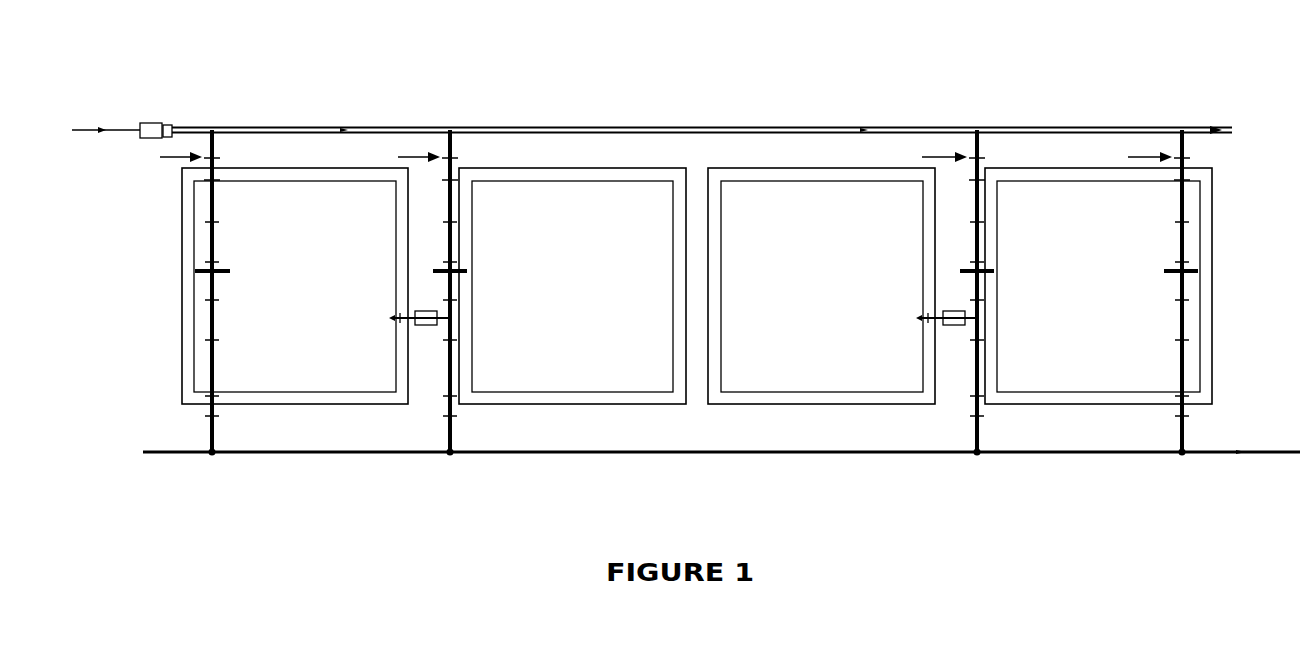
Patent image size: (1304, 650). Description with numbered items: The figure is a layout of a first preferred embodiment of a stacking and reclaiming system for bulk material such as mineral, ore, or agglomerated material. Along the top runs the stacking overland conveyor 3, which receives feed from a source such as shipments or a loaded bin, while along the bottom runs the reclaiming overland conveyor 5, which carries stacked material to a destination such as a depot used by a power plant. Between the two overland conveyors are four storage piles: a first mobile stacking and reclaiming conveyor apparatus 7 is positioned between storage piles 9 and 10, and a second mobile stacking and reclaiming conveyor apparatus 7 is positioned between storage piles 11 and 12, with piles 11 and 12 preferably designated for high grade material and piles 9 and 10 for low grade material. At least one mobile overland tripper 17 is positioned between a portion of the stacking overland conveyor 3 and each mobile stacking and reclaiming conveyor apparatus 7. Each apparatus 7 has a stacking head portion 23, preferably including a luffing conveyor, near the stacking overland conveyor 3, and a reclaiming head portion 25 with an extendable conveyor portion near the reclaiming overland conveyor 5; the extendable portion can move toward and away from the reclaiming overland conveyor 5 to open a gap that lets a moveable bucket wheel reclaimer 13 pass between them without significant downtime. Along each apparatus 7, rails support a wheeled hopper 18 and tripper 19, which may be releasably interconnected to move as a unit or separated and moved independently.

The stacking overland conveyor 3 is at (308, 127).
The reclaiming overland conveyor 5 is at (707, 457).
The mobile stacking and reclaiming conveyor apparatus 7 is at (656, 158).
The storage pile 9 is at (1106, 245).
The storage pile 10 is at (858, 270).
The storage pile 11 is at (604, 270).
The storage pile 12 is at (333, 270).
The moveable bucket wheel reclaimer 13 is at (422, 311).
The mobile overland tripper 17 is at (200, 127).
The hopper 18 is at (452, 309).
The tripper 19 is at (226, 270).
The stacking head portion 23 is at (215, 147).
The reclaiming head portion 25 is at (215, 437).